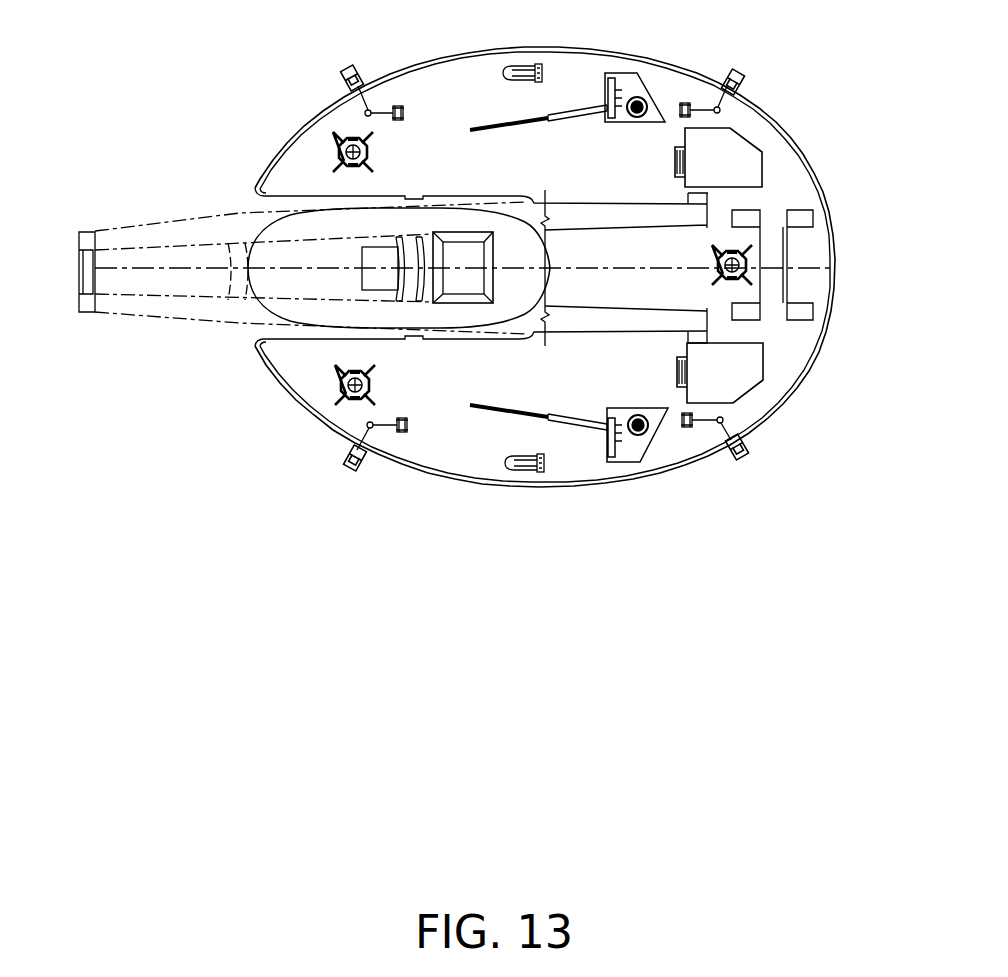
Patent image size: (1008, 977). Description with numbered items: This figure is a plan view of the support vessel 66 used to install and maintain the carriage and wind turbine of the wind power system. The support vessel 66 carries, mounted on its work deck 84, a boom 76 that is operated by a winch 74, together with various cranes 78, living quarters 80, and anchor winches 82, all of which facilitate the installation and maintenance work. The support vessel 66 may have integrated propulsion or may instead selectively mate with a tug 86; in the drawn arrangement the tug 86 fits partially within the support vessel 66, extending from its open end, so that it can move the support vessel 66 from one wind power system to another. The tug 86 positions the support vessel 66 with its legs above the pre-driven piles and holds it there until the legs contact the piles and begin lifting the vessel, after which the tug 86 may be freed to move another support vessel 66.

The support vessel 66 is at (817, 167).
The winch 74 is at (773, 285).
The boom 76 is at (143, 315).
The crane 78 is at (643, 448).
The living quarters 80 is at (722, 157).
The anchor winch 82 is at (745, 458).
The work deck 84 is at (325, 407).
The tug 86 is at (288, 233).